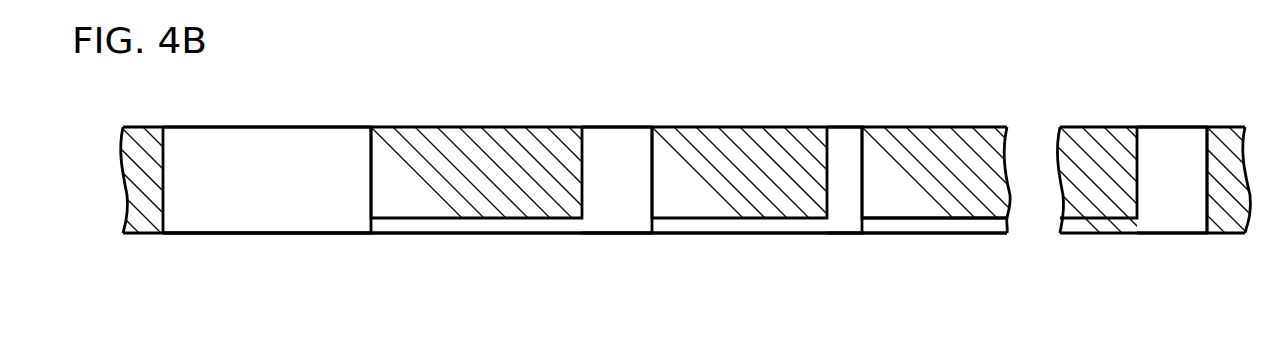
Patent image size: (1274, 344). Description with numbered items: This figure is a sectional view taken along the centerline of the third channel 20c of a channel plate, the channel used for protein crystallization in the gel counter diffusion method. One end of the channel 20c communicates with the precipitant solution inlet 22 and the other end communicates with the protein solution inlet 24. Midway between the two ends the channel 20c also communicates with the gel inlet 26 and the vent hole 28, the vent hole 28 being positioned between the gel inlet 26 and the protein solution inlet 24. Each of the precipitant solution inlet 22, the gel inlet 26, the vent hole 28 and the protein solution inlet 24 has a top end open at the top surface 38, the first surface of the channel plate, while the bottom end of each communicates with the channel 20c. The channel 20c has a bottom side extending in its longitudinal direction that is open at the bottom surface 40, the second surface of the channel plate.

The precipitant solution inlet 22 is at (268, 139).
The gel inlet 26 is at (617, 139).
The top surface 38 is at (741, 131).
The vent hole 28 is at (845, 139).
The protein solution inlet 24 is at (1170, 139).
The bottom surface 40 is at (745, 234).
The third channel 20c is at (896, 226).